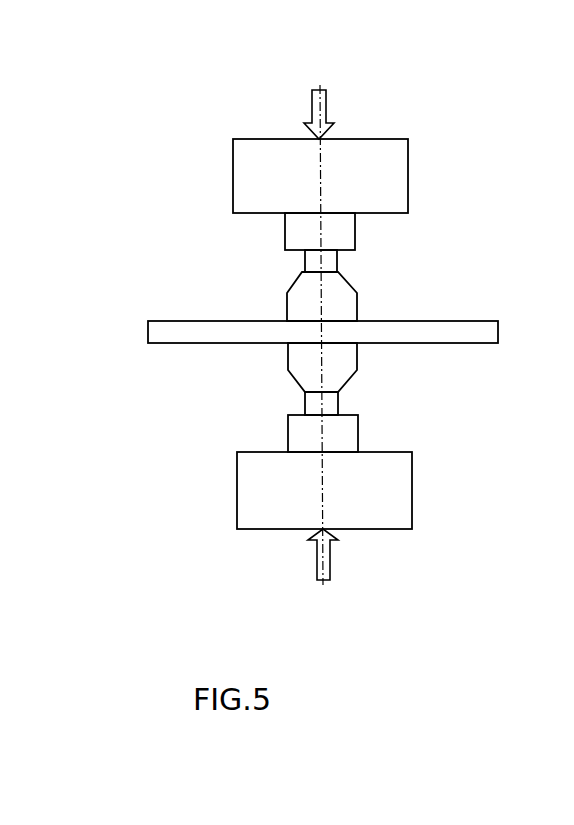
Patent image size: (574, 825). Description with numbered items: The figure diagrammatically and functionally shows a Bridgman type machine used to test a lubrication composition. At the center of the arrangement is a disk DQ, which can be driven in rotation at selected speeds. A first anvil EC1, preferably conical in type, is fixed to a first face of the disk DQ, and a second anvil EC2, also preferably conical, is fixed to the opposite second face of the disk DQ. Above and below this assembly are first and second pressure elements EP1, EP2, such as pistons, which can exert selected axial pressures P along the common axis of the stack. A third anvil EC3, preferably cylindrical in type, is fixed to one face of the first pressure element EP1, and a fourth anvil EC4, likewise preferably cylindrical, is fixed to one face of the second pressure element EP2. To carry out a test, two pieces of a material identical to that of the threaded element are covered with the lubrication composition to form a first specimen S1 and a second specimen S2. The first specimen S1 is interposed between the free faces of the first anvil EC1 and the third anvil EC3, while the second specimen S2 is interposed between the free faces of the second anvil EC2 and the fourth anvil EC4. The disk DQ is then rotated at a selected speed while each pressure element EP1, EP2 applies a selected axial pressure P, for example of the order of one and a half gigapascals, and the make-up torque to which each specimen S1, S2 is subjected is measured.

The axial pressure P is at (321, 338).
The first pressure element EP1 is at (233, 185).
The second pressure element EP2 is at (237, 492).
The first anvil EC1 is at (287, 295).
The second anvil EC2 is at (290, 374).
The third anvil EC3 is at (285, 236).
The fourth anvil EC4 is at (288, 431).
The first specimen S1 is at (337, 258).
The second specimen S2 is at (338, 402).
The disk DQ is at (148, 342).